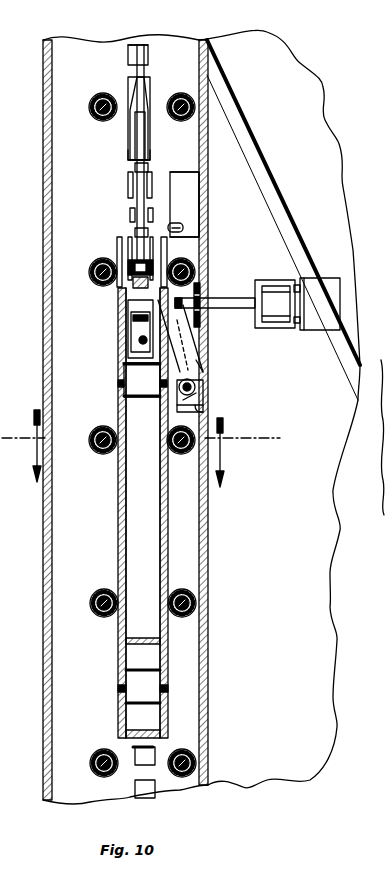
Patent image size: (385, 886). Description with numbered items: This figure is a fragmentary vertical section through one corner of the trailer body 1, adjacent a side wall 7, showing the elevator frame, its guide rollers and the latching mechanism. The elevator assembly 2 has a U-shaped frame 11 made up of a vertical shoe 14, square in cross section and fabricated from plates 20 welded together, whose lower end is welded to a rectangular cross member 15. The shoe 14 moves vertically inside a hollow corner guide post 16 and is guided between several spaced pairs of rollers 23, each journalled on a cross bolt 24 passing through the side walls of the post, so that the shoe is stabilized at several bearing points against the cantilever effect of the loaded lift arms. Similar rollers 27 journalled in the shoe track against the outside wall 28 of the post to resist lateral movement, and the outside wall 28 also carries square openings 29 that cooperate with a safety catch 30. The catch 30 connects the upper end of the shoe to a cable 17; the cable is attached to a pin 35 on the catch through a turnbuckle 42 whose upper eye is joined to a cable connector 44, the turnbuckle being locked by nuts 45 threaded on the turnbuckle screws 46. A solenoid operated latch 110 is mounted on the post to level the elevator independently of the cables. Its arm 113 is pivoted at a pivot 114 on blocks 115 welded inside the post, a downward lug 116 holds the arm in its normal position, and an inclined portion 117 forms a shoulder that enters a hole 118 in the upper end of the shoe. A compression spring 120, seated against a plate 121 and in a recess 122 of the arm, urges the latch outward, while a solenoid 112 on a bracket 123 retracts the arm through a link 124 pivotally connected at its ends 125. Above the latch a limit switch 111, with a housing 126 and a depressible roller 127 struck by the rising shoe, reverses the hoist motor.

The apparatus 1 is at (381, 117).
The elevator assembly 2 is at (112, 557).
The side wall 7 is at (324, 577).
The U-shaped frame 11 is at (141, 448).
The vertical shoe 14 is at (119, 534).
The cross member 15 is at (145, 637).
The corner guide post 16 is at (209, 585).
The cable 17 is at (137, 71).
The plate 20 is at (118, 493).
The roller 23 is at (98, 96).
The cross bolt 24 is at (94, 613).
The roller 27 is at (130, 391).
The outside wall 28 is at (120, 50).
The square opening 29 is at (149, 60).
The safety catch 30 is at (128, 314).
The pin 35 is at (126, 264).
The turnbuckle 42 is at (138, 190).
The cable connector 44 is at (134, 126).
The nut 45 is at (136, 168).
The turnbuckle screw 46 is at (152, 150).
The solenoid operated latch 110 is at (274, 276).
The limit switch 111 is at (192, 195).
The latch solenoid 112 is at (290, 278).
The latch arm 113 is at (195, 320).
The pivot 114 is at (207, 384).
The block 115 is at (210, 412).
The lug 116 is at (210, 402).
The inclined portion 117 is at (130, 339).
The hole 118 is at (125, 361).
The compression spring 120 is at (200, 357).
The plate 121 is at (197, 337).
The recess 122 is at (210, 367).
The bracket 123 is at (329, 288).
The link 124 is at (221, 299).
The pivot connection 125 is at (203, 262).
The housing 126 is at (183, 176).
The depressible roller 127 is at (168, 228).